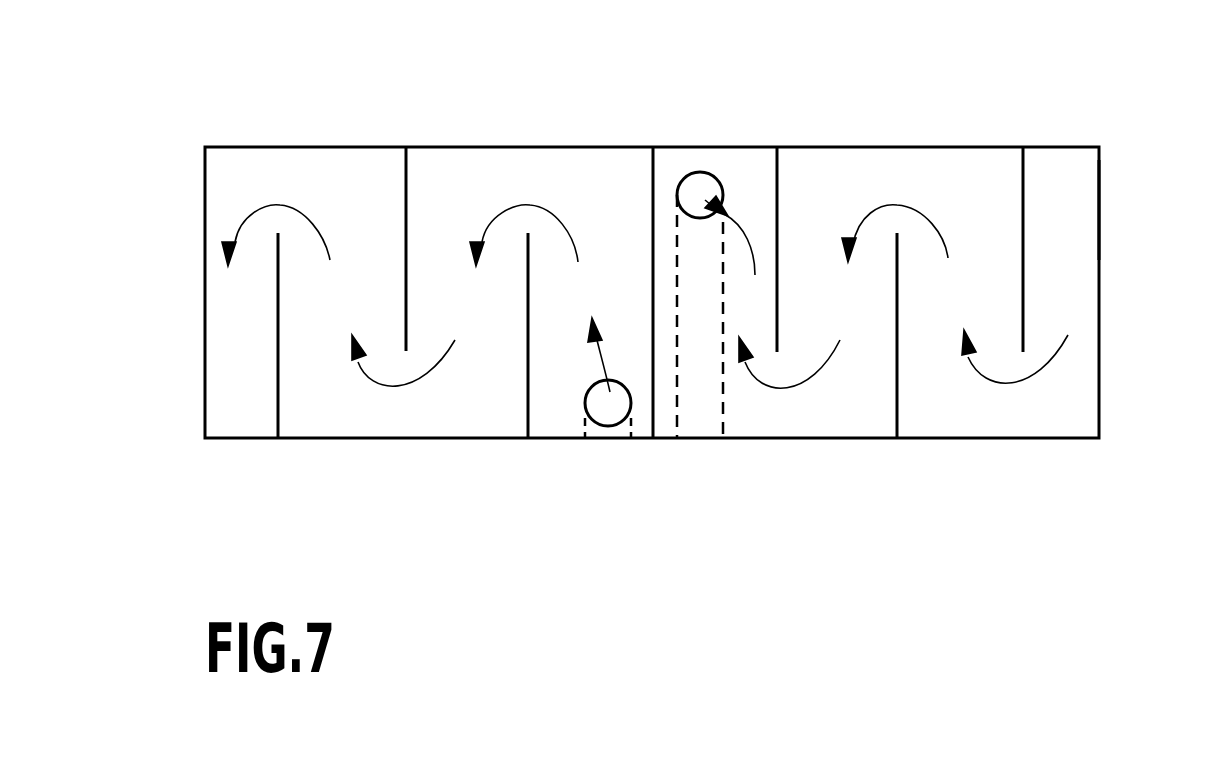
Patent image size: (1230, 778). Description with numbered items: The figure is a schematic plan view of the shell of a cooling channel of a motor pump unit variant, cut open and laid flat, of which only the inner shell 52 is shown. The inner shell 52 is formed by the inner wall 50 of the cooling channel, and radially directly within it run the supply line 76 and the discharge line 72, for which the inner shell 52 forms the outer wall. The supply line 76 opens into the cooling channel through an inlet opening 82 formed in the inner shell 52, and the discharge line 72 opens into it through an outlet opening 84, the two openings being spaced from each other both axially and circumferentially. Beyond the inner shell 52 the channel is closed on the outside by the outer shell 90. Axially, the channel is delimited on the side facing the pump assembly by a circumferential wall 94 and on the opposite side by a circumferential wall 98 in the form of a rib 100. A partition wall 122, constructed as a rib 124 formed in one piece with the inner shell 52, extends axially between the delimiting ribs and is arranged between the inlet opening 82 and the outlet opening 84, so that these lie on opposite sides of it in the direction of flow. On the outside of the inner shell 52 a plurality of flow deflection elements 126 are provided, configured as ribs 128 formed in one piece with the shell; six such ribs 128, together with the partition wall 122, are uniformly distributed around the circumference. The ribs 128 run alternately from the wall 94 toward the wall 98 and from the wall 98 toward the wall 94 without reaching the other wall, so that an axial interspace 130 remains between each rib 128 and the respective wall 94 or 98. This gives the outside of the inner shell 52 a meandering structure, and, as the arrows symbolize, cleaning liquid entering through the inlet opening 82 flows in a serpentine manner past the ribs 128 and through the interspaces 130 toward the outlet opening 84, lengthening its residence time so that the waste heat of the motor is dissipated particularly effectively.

The inner wall 50 is at (1078, 180).
The inner shell 52 is at (1078, 227).
The discharge line 72 is at (680, 380).
The supply line 76 is at (598, 440).
The inlet opening 82 is at (612, 412).
The outlet opening 84 is at (703, 185).
The outer shell 90 is at (967, 440).
The circumferential wall 94 is at (866, 440).
The circumferential wall 98 is at (815, 146).
The rib 100 is at (963, 146).
The partition wall 122 is at (650, 185).
The rib 124 is at (651, 228).
The flow deflection elements 126 is at (279, 360).
The ribs 128 is at (279, 305).
The axial interspace 130 is at (275, 190).